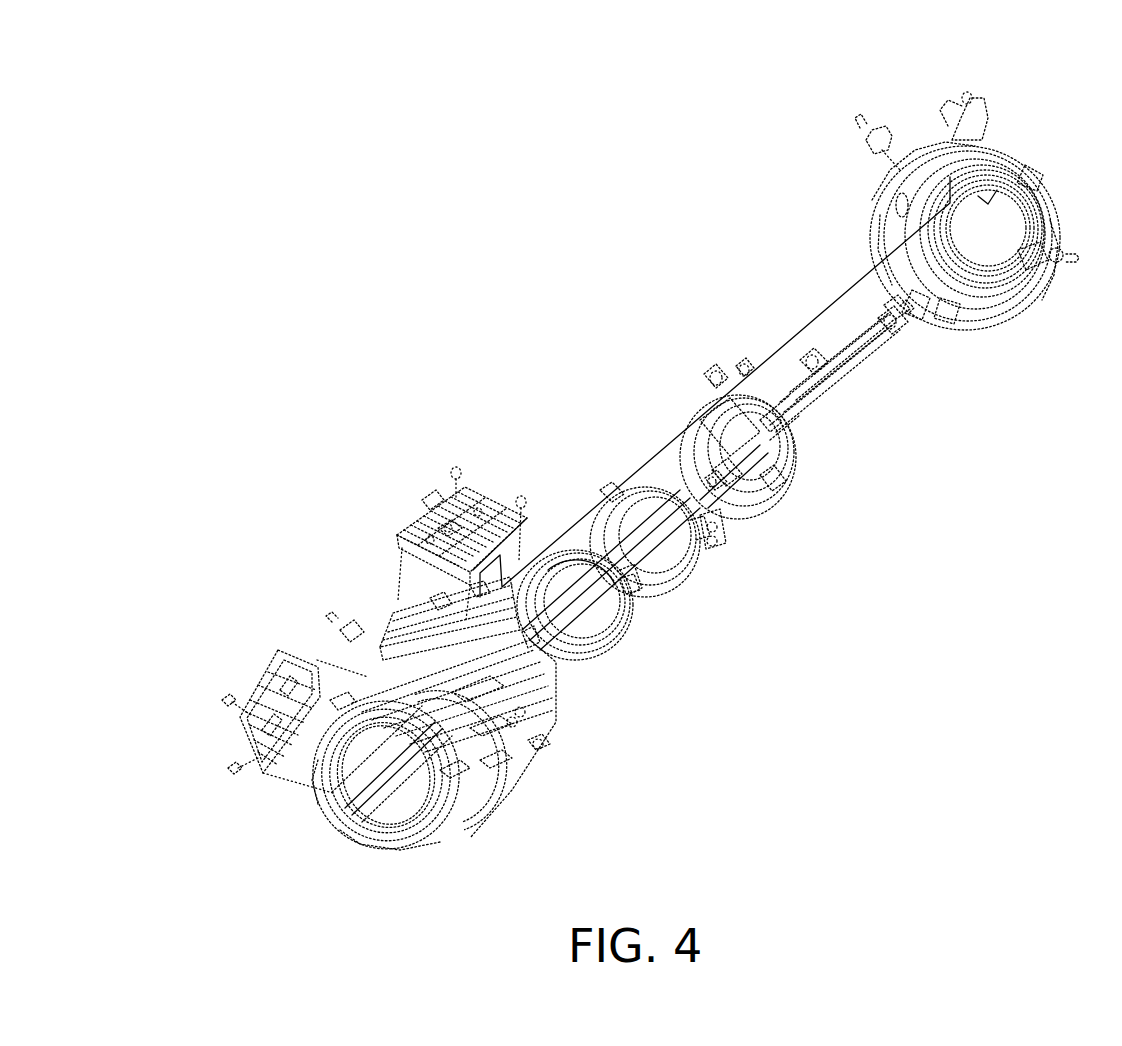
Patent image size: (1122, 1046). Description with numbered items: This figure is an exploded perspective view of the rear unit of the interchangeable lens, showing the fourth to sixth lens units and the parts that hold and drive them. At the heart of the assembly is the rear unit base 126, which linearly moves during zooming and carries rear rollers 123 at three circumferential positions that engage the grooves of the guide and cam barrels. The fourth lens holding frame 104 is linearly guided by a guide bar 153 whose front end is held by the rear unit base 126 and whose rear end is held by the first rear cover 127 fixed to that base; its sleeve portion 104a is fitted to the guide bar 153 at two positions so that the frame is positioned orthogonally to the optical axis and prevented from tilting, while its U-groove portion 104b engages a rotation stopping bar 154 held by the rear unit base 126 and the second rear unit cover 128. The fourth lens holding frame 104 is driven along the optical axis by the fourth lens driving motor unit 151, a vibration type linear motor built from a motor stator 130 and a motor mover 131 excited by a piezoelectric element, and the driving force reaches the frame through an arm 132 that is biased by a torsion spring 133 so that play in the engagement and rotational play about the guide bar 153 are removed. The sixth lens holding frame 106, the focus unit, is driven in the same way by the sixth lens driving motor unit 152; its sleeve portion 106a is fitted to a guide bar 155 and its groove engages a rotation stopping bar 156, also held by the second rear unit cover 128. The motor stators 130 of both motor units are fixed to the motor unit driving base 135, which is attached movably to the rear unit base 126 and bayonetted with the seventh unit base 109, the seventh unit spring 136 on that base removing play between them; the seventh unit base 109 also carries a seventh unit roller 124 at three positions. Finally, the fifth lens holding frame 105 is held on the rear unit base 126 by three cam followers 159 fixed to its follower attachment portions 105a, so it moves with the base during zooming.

The fourth lens holding frame 104 is at (556, 553).
The sleeve portion 104a is at (528, 628).
The U-groove portion 104b is at (623, 586).
The fifth lens holding frame 105 is at (618, 474).
The follower attachment portions 105a is at (713, 540).
The sixth lens holding frame 106 is at (740, 510).
The sleeve portion 106a is at (713, 480).
The seventh unit base 109 is at (1003, 188).
The rear rollers 123 is at (536, 743).
The seventh unit roller 124 is at (878, 140).
The rear unit base 126 is at (500, 778).
The first rear cover 127 is at (810, 355).
The second rear unit cover 128 is at (886, 306).
The motor stator 130 is at (490, 490).
The motor mover 131 is at (450, 525).
The arm 132 is at (710, 368).
The torsion spring 133 is at (742, 362).
The motor unit driving base 135 is at (372, 620).
The seventh unit spring 136 is at (975, 130).
The fourth lens driving motor unit 151 is at (267, 687).
The sixth lens driving motor unit 152 is at (424, 484).
The guide bar 153 is at (775, 415).
The rotation stopping bar 154 is at (862, 360).
The guide bar 155 is at (812, 385).
The rotation stopping bar 156 is at (772, 400).
The cam followers 159 is at (345, 630).